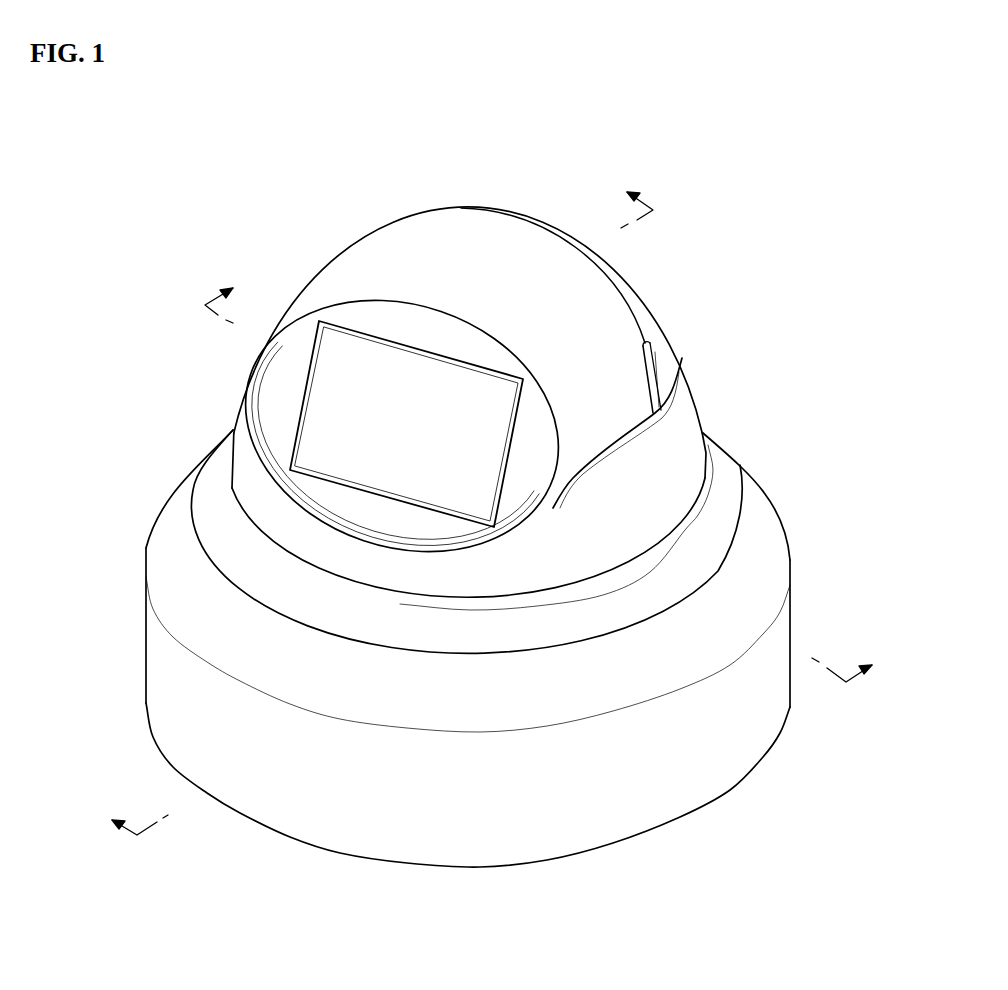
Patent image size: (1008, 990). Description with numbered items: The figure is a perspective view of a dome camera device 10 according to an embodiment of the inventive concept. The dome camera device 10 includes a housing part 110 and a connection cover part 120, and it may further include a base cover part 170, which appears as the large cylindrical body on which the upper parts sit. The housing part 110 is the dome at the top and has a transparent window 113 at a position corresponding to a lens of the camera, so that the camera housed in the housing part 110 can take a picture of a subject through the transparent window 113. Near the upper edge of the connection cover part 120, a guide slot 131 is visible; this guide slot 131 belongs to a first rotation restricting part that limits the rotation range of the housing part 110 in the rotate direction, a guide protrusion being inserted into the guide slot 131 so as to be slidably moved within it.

The dome camera device 10 is at (447, 138).
The housing part 110 is at (372, 282).
The transparent window 113 is at (338, 400).
The connection cover part 120 is at (244, 460).
The guide slot 131 is at (652, 360).
The base cover part 170 is at (160, 662).